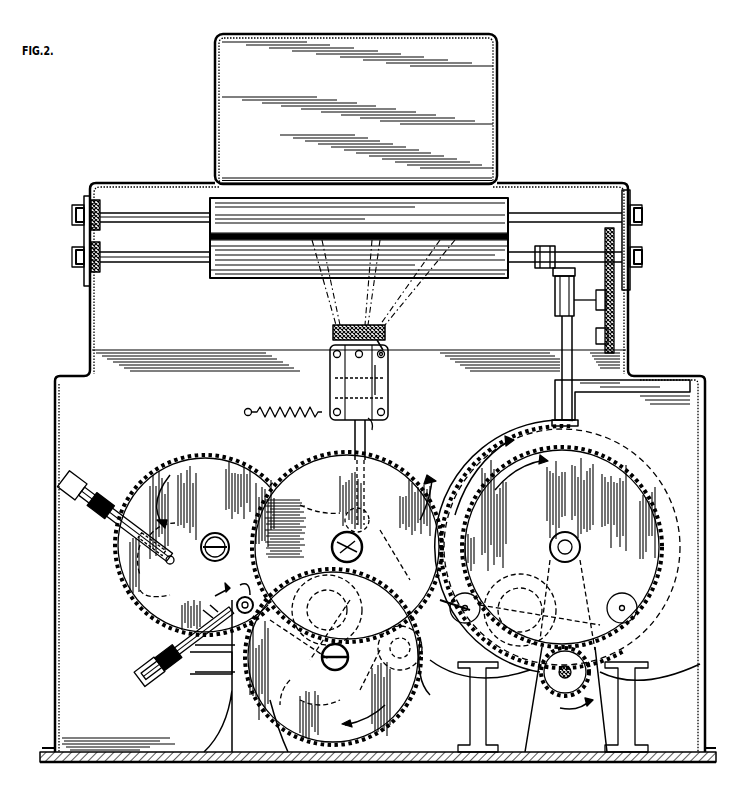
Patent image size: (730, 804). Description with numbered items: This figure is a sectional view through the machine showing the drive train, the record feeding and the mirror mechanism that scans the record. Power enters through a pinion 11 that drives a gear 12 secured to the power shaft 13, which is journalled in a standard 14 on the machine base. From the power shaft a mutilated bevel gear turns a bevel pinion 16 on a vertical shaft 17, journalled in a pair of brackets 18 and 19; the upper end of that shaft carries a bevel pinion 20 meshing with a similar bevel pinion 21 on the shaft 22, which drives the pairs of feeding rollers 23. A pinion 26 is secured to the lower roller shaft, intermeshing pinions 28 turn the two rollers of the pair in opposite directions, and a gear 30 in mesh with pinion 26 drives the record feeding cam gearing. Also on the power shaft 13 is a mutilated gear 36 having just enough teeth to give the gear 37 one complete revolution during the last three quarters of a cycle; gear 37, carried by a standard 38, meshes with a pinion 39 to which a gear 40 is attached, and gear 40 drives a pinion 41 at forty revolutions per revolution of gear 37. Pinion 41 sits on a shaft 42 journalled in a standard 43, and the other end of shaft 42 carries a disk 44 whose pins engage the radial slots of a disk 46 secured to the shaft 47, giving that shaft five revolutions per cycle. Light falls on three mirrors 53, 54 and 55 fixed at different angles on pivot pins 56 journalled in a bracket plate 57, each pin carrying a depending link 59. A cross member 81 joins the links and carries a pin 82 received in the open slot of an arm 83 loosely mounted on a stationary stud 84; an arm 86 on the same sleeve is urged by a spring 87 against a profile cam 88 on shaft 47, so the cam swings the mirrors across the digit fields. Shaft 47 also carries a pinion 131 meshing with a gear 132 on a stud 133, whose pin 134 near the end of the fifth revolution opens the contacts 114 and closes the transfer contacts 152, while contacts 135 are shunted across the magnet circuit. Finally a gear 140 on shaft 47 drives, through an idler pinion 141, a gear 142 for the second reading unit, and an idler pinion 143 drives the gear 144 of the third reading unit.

The pinion 11 is at (545, 684).
The gear 12 is at (640, 468).
The power shaft 13 is at (560, 540).
The standard 14 is at (540, 722).
The bevel pinion 16 is at (554, 423).
The vertical shaft 17 is at (562, 335).
The bracket 18 is at (555, 303).
The bracket 19 is at (612, 386).
The bevel pinion 20 is at (556, 272).
The bevel pinion 21 is at (552, 253).
The shaft 22 is at (134, 263).
The pair of feeding rollers 23 is at (234, 262).
The pinion 26 is at (615, 238).
The intermeshing pinions 28 is at (108, 245).
The gear 30 is at (612, 325).
The mutilated gear 36 is at (668, 490).
The gear 37 is at (302, 476).
The standard 38 is at (385, 743).
The pinion 39 is at (361, 679).
The gear 40 is at (325, 716).
The pinion 41 is at (239, 589).
The shaft 42 is at (215, 648).
The standard 43 is at (228, 732).
The disk 44 is at (216, 589).
The disk 46 is at (276, 692).
The shaft 47 is at (316, 652).
The mirror 53 is at (332, 348).
The mirror 54 is at (353, 356).
The mirror 55 is at (388, 357).
The pivot pins 56 is at (386, 350).
The bracket plate 57 is at (378, 378).
The link 59 is at (376, 402).
The cross member 81 is at (373, 422).
The pin 82 is at (356, 422).
The arm 83 is at (365, 459).
The stationary stud 84 is at (370, 520).
The arm 86 is at (340, 532).
The spring 87 is at (278, 410).
The profile cam 88 is at (311, 515).
The contacts 114 is at (128, 518).
The pinion 131 is at (399, 555).
The gear 132 is at (145, 605).
The stud 133 is at (216, 532).
The pin 134 is at (173, 564).
The contacts 135 is at (185, 642).
The gear 140 is at (240, 685).
The idler pinion 141 is at (392, 670).
The gear 142 is at (432, 672).
The idler pinion 143 is at (543, 605).
The gear 144 is at (565, 675).
The contacts 152 is at (151, 567).